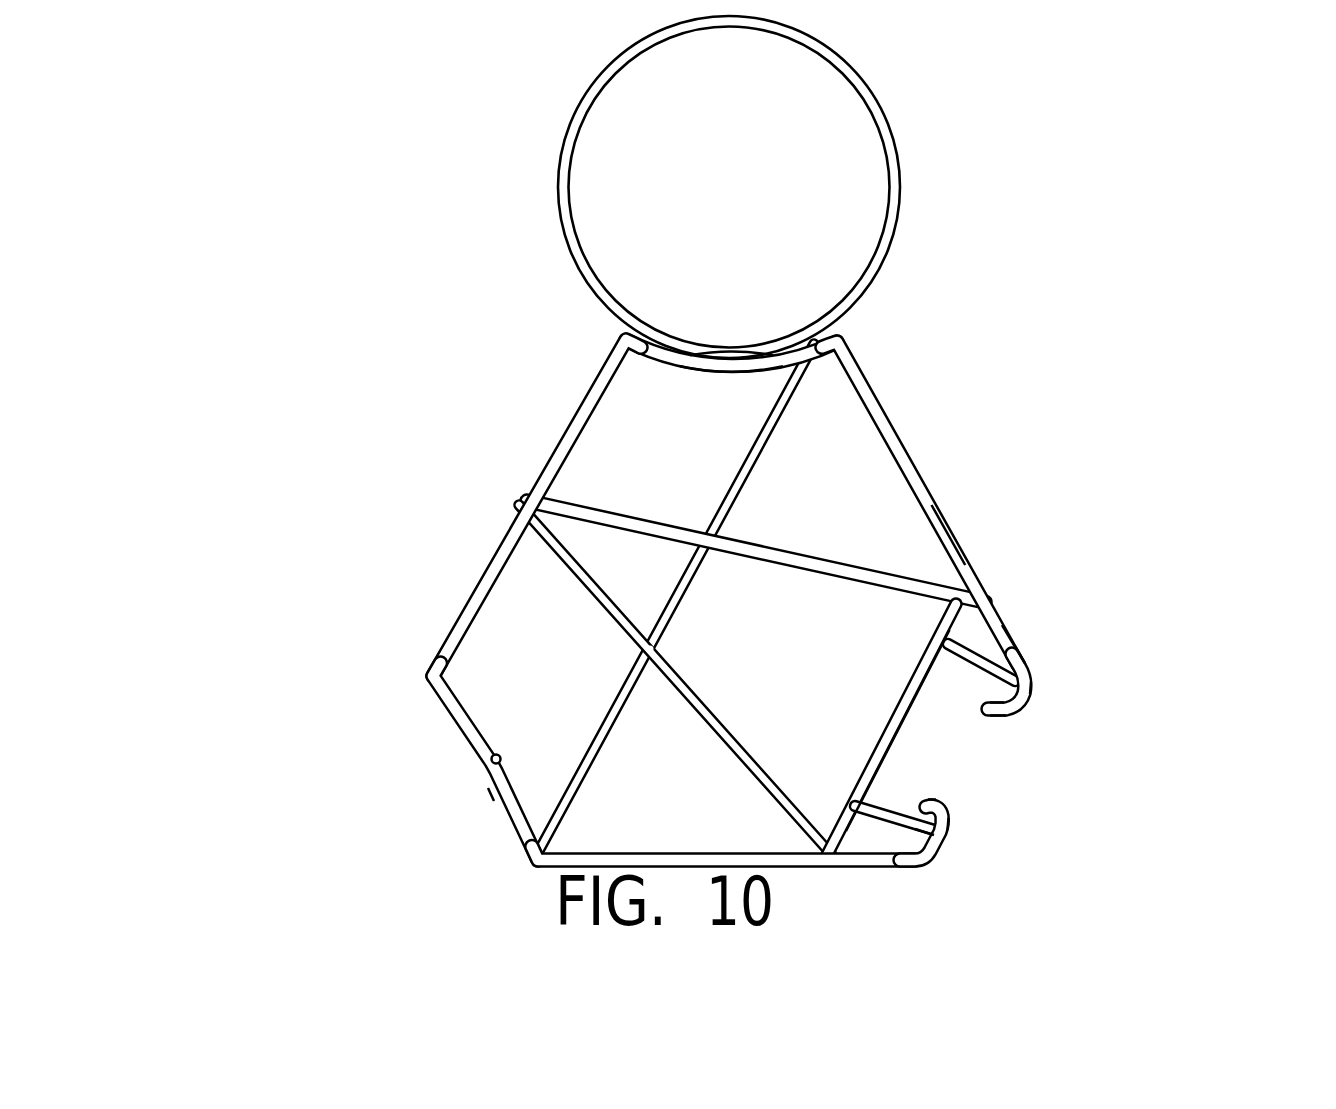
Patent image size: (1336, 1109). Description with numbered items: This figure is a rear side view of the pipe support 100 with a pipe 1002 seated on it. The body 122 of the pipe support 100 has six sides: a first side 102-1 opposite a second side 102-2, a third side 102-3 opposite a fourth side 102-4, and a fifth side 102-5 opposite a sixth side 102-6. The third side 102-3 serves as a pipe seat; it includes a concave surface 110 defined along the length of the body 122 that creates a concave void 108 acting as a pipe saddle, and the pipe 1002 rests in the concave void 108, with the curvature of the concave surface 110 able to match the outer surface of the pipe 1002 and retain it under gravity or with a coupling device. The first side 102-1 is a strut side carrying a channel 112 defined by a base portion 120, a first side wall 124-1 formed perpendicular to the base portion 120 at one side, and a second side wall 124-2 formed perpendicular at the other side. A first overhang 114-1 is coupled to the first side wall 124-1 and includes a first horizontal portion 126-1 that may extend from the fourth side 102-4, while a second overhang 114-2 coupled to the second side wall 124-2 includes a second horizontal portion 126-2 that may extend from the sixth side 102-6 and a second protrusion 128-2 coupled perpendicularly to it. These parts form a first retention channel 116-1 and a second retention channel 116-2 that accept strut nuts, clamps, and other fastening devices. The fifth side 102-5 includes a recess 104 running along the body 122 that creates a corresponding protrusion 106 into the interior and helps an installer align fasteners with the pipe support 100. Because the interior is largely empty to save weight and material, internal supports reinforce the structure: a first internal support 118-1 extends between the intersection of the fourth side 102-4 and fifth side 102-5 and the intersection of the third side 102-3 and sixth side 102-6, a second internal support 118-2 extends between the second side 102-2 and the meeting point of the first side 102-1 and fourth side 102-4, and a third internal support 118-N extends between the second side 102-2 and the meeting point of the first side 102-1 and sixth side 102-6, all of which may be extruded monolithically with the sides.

The pipe support 100 is at (736, 612).
The pipe 1002 is at (866, 90).
The first side 102-1 is at (1033, 683).
The second side 102-2 is at (497, 551).
The third side 102-3 is at (843, 372).
The fourth side 102-4 is at (558, 869).
The fifth side 102-5 is at (450, 722).
The sixth side 102-6 is at (933, 490).
The recess 104 is at (470, 775).
The protrusion 106 is at (487, 778).
The concave void 108 is at (712, 348).
The concave surface 110 is at (707, 366).
The channel 112 is at (912, 733).
The first overhang 114-1 is at (1007, 720).
The second overhang 114-2 is at (950, 828).
The first retention channel 116-1 is at (1005, 687).
The second retention channel 116-2 is at (926, 826).
The first internal support 118-1 is at (752, 481).
The second internal support 118-2 is at (603, 520).
The third internal support 118-N is at (566, 556).
The base portion 120 is at (897, 713).
The body 122 is at (1016, 532).
The first side wall 124-1 is at (970, 664).
The second side wall 124-2 is at (888, 816).
The first horizontal portion 126-1 is at (1013, 703).
The second horizontal portion 126-2 is at (948, 834).
The second protrusion 128-2 is at (995, 714).